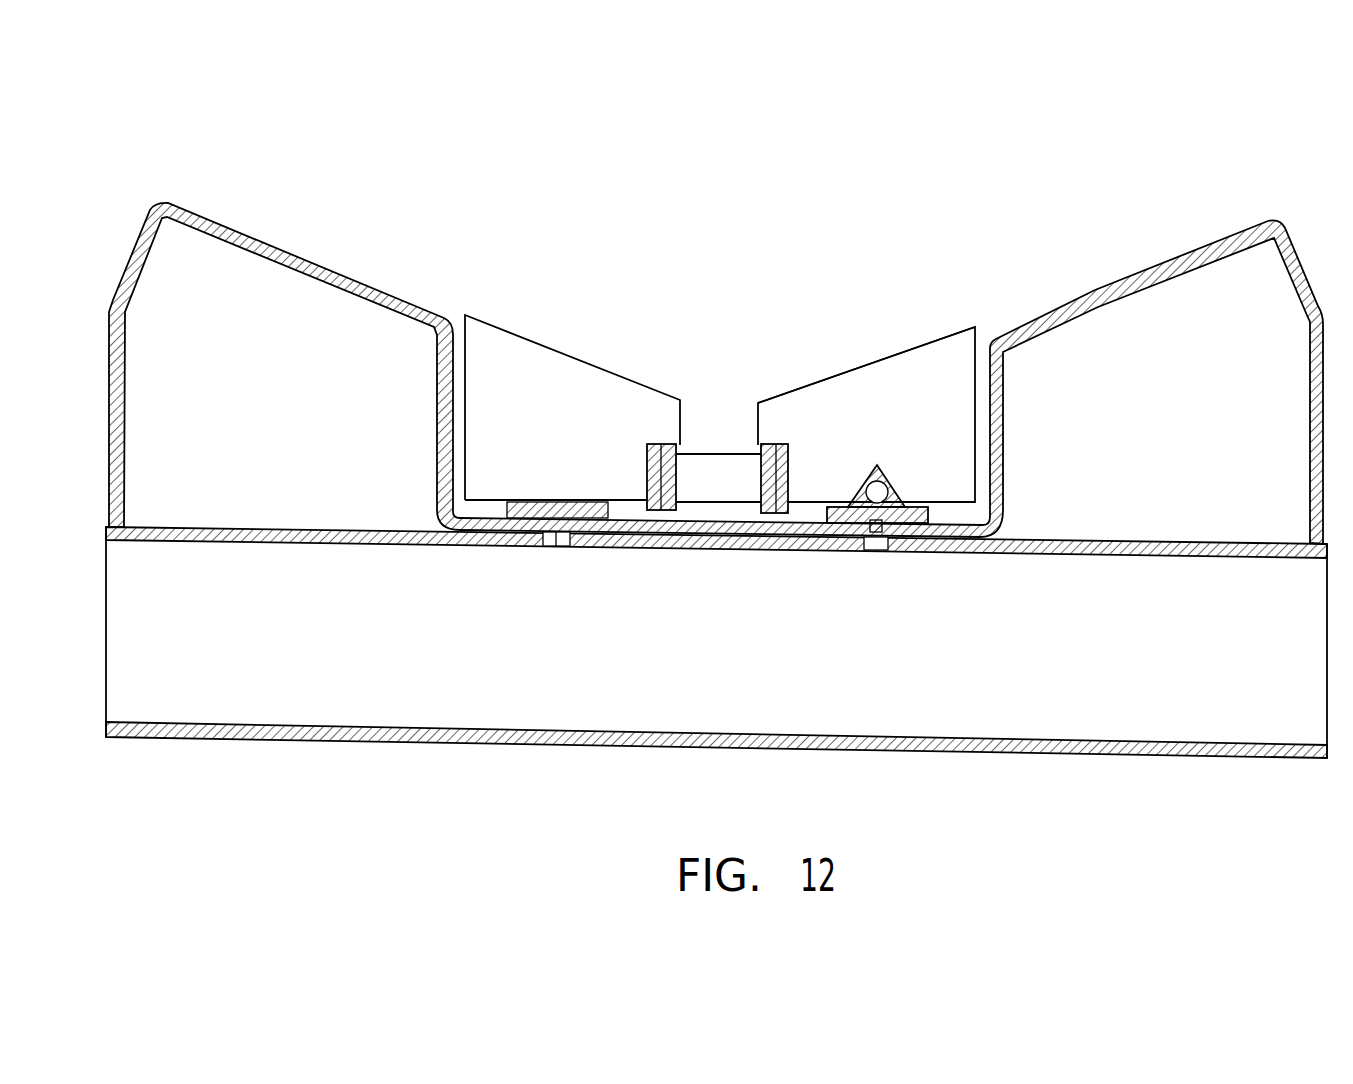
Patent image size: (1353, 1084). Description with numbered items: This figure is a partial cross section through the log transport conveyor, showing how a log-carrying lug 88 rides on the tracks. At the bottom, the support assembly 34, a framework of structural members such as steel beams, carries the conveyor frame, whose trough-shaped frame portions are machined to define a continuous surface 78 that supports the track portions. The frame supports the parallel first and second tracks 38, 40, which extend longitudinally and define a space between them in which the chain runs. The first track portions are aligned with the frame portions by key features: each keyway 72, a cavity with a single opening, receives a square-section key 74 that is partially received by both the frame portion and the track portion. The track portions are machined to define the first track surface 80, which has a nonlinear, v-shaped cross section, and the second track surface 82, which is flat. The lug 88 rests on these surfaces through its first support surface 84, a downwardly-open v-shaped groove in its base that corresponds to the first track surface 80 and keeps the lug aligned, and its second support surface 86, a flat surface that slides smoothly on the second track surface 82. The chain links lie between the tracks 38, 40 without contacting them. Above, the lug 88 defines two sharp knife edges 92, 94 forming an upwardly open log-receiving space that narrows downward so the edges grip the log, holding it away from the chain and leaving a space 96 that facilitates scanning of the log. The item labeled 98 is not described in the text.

The support assembly 34 is at (1180, 755).
The first track 38 is at (947, 550).
The second track 40 is at (510, 510).
The keyway 72 is at (870, 530).
The key 74 is at (905, 540).
The continuous surface 78 is at (958, 507).
The first track surface 80 is at (888, 475).
The second track surface 82 is at (537, 492).
The first support surface 84 is at (865, 470).
The second support surface 86 is at (585, 503).
The log-carrying lug 88 is at (842, 390).
The knife edge 92 is at (928, 340).
The knife edge 94 is at (553, 345).
The space 96 is at (715, 417).
The connector block 98 is at (767, 480).